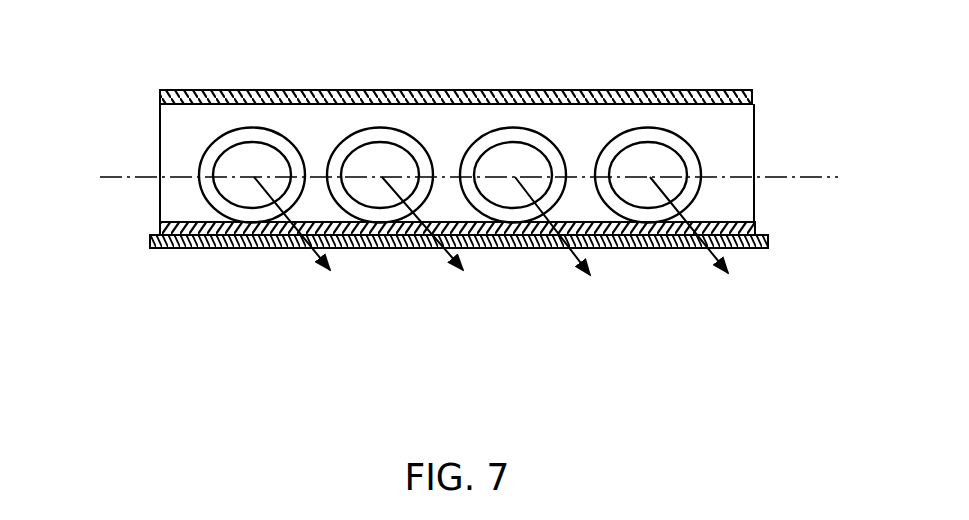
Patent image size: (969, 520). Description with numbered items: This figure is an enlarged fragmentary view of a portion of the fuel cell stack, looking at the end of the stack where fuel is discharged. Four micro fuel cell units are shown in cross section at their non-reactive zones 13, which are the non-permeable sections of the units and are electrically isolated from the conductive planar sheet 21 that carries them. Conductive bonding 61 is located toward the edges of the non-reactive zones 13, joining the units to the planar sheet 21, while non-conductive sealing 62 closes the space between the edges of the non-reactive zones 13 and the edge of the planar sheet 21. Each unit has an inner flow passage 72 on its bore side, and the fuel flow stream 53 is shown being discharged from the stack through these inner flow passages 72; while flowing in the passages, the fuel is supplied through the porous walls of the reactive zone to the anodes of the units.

The conductive planar sheet 21 is at (160, 97).
The conductive bonding 61 is at (310, 142).
The inner flow passages 72 is at (255, 160).
The non-reactive zones 13 is at (513, 137).
The fuel flow stream 53 is at (460, 258).
The non-conductive sealing 62 is at (610, 245).